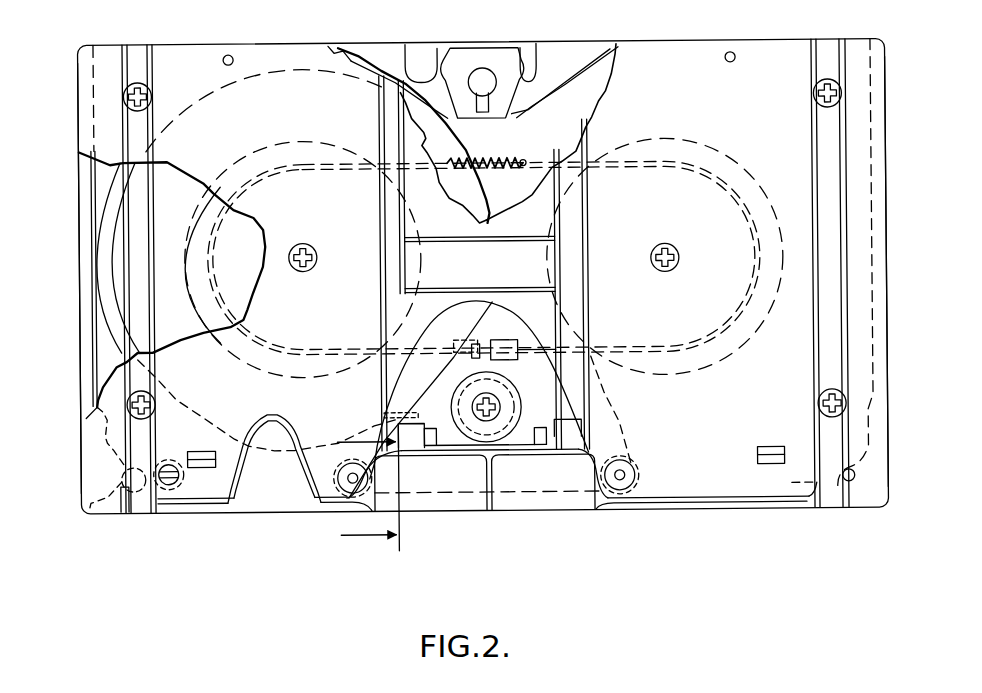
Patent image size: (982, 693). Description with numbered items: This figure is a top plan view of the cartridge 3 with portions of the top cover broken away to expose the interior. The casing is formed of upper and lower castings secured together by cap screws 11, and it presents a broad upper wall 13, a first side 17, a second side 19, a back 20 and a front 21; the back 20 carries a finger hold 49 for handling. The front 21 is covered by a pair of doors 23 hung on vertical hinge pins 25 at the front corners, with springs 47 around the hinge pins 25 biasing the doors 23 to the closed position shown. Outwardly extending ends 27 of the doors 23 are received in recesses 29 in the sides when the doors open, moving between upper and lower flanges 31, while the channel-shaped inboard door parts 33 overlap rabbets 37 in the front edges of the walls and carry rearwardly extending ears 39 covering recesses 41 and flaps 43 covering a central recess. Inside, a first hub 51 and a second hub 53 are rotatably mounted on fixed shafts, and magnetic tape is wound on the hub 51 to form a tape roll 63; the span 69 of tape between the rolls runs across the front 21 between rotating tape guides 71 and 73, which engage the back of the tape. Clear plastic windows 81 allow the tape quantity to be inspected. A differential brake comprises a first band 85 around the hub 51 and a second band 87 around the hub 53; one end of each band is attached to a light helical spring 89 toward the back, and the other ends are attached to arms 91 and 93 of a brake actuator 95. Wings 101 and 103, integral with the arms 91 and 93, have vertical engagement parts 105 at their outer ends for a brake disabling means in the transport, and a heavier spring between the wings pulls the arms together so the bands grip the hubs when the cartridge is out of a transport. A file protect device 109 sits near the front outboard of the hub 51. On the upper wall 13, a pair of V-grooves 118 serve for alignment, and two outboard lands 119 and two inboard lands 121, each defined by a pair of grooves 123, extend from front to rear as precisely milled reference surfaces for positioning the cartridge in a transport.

The cartridge 3 is at (358, 489).
The cap screws 11 is at (838, 86).
The upper wall 13 is at (479, 75).
The first side 17 is at (78, 252).
The second side 19 is at (889, 357).
The back 20 is at (650, 41).
The front 21 is at (646, 508).
The doors 23 is at (292, 514).
The hinge pins 25 is at (127, 511).
The outwardly extending ends 27 is at (93, 512).
The recesses 29 is at (86, 446).
The flanges 31 is at (84, 224).
The door parts 33 is at (462, 500).
The rabbets 37 is at (342, 478).
The ears 39 is at (262, 466).
The recesses 41 is at (255, 418).
The flaps 43 is at (580, 482).
The springs 47 is at (866, 490).
The finger hold 49 is at (528, 62).
The hub 51 is at (197, 262).
The hub 53 is at (738, 172).
The tape roll 63 is at (128, 200).
The span 69 is at (438, 497).
The tape guide 71 is at (369, 506).
The tape guide 73 is at (634, 476).
The windows 81 is at (480, 264).
The first band 85 is at (418, 346).
The second band 87 is at (533, 344).
The helical spring 89 is at (498, 160).
The arm 91 is at (481, 346).
The arm 93 is at (516, 366).
The brake actuator 95 is at (443, 380).
The wing 101 is at (543, 414).
The wing 103 is at (440, 411).
The engagement parts 105 is at (407, 413).
The file protect device 109 is at (170, 461).
The V-grooves 118 is at (762, 449).
The outboard lands 119 is at (137, 55).
The inboard lands 121 is at (392, 92).
The grooves 123 is at (124, 46).